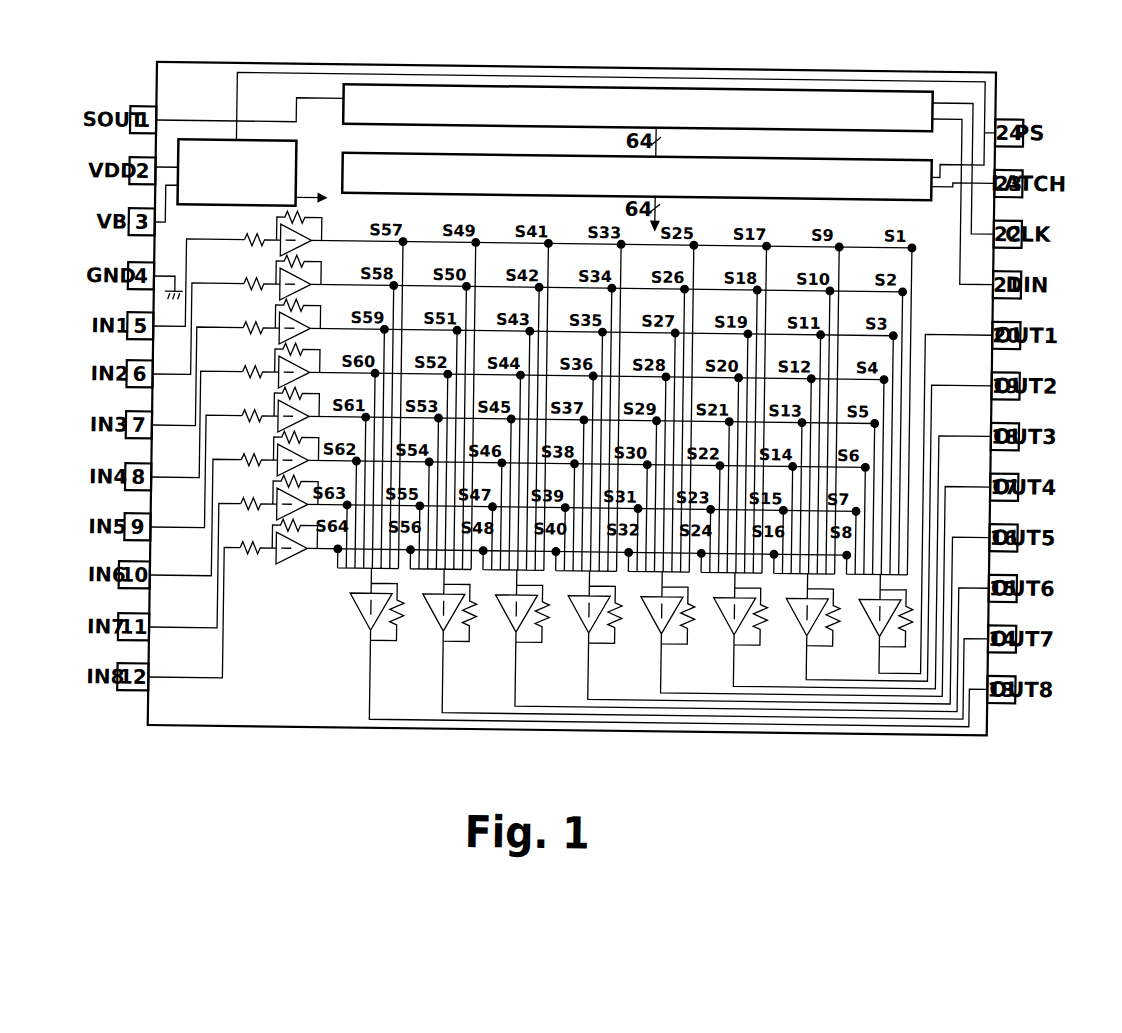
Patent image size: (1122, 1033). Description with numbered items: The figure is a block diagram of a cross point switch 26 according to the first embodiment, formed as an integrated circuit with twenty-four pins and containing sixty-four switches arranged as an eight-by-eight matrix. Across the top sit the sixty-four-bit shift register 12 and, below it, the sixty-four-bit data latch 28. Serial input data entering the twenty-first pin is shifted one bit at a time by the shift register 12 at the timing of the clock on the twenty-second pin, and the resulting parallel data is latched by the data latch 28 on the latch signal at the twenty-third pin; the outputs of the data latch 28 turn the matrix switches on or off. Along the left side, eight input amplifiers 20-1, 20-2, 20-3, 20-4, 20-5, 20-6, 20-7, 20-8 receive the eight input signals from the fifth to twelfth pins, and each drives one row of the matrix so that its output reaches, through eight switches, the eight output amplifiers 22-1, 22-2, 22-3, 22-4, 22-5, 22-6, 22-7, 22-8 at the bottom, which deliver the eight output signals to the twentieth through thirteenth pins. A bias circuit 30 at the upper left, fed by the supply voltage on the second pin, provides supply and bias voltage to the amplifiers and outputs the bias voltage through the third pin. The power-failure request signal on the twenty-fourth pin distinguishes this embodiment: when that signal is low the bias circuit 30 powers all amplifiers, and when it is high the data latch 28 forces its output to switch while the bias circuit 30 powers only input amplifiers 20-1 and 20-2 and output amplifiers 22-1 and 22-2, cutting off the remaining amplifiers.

The cross point switch 26 is at (597, 60).
The 64-bit shift register 12 is at (862, 81).
The 64-bit data latch 28 is at (815, 150).
The bias circuit 30 is at (298, 171).
The input amplifier 20-1 is at (282, 252).
The input amplifier 20-2 is at (282, 296).
The input amplifier 20-3 is at (282, 340).
The input amplifier 20-4 is at (282, 384).
The input amplifier 20-5 is at (282, 428).
The input amplifier 20-6 is at (282, 472).
The input amplifier 20-7 is at (282, 516).
The input amplifier 20-8 is at (282, 560).
The output amplifier 22-1 is at (873, 615).
The output amplifier 22-2 is at (801, 615).
The output amplifier 22-3 is at (728, 615).
The output amplifier 22-4 is at (655, 615).
The output amplifier 22-5 is at (583, 615).
The output amplifier 22-6 is at (510, 615).
The output amplifier 22-7 is at (437, 615).
The output amplifier 22-8 is at (364, 598).